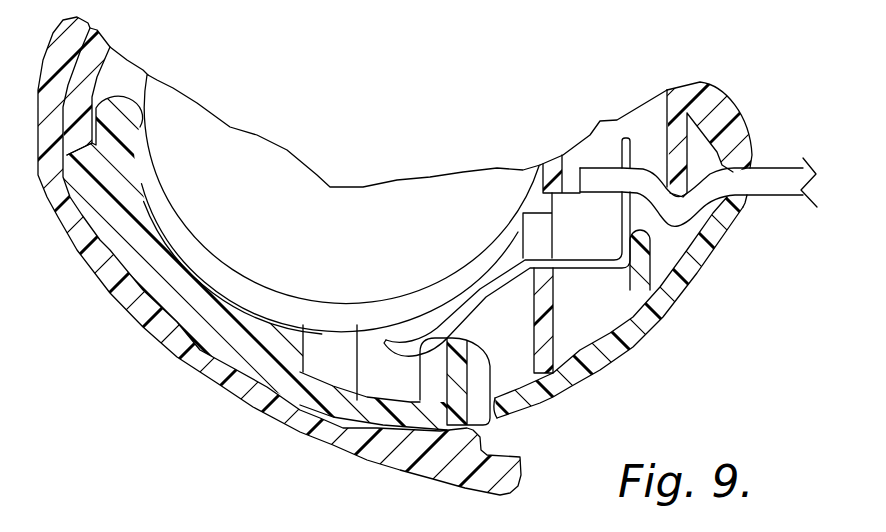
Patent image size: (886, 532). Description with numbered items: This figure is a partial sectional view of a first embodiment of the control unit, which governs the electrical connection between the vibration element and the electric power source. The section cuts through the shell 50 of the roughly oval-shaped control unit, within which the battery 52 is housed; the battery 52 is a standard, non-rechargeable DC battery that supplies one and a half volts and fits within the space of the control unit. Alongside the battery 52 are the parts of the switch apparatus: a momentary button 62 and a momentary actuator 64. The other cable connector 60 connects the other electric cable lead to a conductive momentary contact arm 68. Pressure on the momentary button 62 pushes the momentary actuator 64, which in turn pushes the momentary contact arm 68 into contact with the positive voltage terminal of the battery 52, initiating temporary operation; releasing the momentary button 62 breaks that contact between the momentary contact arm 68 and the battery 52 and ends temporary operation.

The shell 50 is at (692, 273).
The battery 52 is at (252, 165).
The other cable connector 60 is at (625, 153).
The momentary button 62 is at (422, 470).
The momentary actuator 64 is at (483, 372).
The momentary contact arm 68 is at (483, 293).